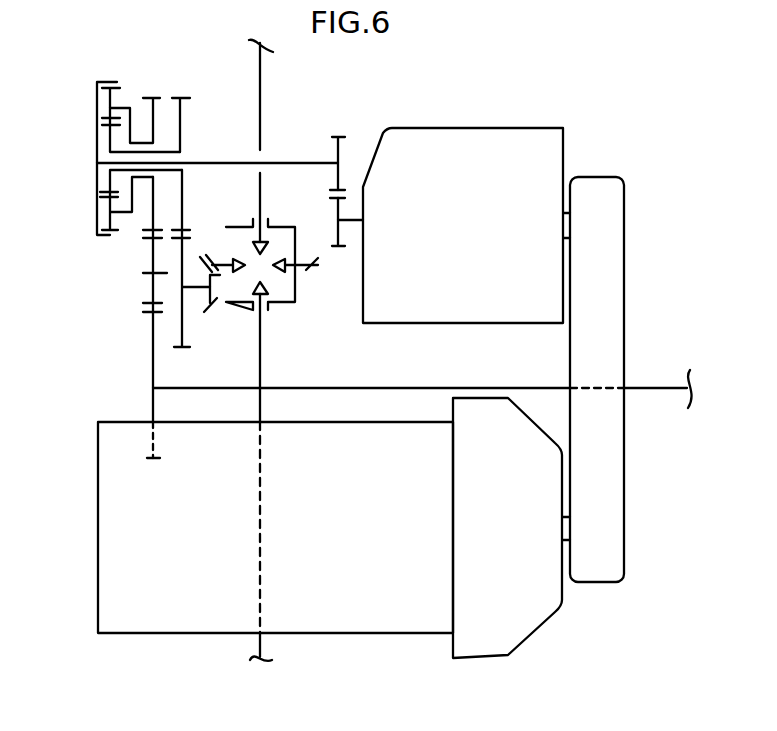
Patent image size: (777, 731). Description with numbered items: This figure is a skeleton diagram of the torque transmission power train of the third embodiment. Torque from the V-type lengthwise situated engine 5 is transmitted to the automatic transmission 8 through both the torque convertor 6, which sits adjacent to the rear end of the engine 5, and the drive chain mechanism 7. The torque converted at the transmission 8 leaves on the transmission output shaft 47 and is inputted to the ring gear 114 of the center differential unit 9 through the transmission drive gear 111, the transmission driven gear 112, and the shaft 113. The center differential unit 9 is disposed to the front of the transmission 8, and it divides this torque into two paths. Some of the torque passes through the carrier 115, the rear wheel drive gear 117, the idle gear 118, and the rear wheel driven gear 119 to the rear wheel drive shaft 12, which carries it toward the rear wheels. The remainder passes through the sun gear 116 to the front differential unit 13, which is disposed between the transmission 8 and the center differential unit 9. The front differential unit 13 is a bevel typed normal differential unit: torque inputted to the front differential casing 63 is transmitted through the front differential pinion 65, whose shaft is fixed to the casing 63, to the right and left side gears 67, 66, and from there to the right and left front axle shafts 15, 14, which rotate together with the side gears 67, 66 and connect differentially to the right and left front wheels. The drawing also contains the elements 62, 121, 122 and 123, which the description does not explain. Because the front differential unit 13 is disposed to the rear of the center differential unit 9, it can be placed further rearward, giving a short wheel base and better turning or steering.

The engine 5 is at (96, 625).
The torque convertor 6 is at (532, 633).
The drive chain mechanism 7 is at (628, 300).
The automatic transmission 8 is at (552, 140).
The center differential unit 9 is at (84, 243).
The rear wheel drive shaft 12 is at (660, 392).
The front differential unit 13 is at (297, 309).
The left front axle shaft 14 is at (262, 643).
The right front axle shaft 15 is at (263, 92).
The transmission output shaft 47 is at (350, 219).
The clutch 62 is at (222, 258).
The front differential casing 63 is at (278, 304).
The front differential pinion 65 is at (295, 290).
The left side gear 66 is at (232, 304).
The right side gear 67 is at (268, 238).
The transmission drive gear 111 is at (340, 248).
The transmission driven gear 112 is at (338, 137).
The shaft 113 is at (222, 162).
The ring gear 114 is at (99, 82).
The carrier 115 is at (113, 98).
The sun gear 116 is at (105, 182).
The rear wheel drive gear 117 is at (148, 225).
The idle gear 118 is at (150, 245).
The rear wheel driven gear 119 is at (148, 328).
The gear 121 is at (183, 97).
The shaft 122 is at (181, 350).
The clutch 123 is at (204, 314).